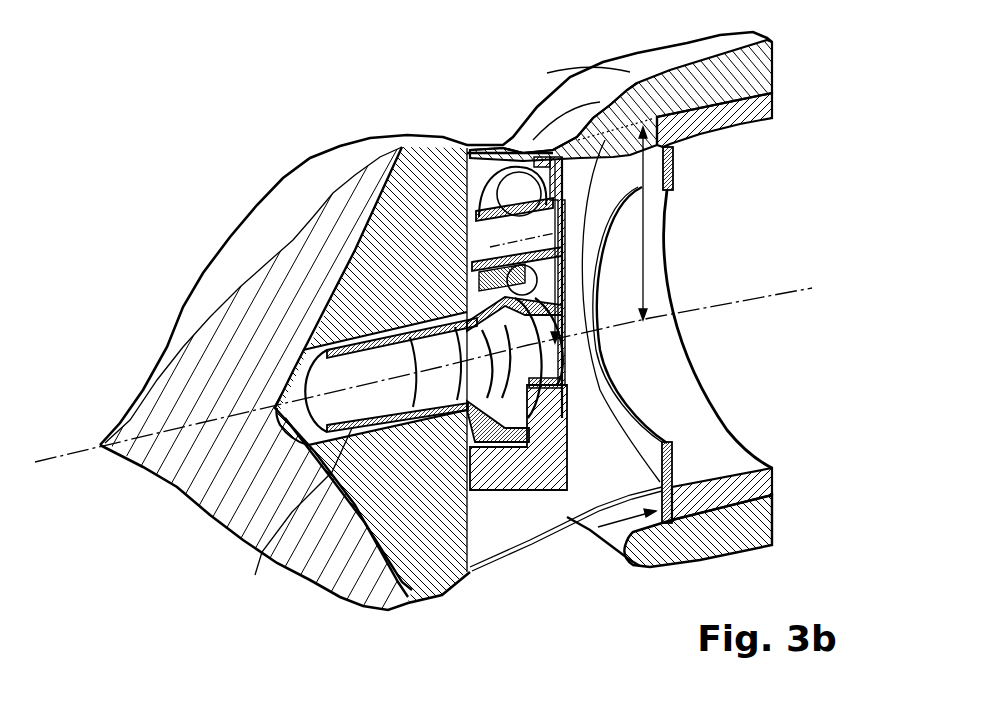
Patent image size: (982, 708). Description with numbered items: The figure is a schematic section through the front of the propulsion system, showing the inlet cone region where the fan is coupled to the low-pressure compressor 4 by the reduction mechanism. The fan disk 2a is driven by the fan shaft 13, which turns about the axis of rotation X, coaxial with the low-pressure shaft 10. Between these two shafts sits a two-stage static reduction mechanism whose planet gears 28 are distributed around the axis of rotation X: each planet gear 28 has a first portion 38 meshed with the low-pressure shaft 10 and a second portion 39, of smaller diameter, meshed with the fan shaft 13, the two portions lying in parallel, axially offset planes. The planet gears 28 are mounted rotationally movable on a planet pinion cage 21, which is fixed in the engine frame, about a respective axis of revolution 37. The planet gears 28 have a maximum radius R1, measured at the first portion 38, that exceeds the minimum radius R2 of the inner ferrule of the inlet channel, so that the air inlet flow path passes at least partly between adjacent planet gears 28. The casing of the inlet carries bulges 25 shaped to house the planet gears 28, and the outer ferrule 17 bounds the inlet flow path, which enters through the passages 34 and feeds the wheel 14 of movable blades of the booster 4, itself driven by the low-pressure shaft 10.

The fan disk 2a is at (437, 578).
The low-pressure compressor 4 is at (768, 106).
The low-pressure shaft 10 is at (567, 373).
The fan shaft 13 is at (262, 556).
The wheel of movable blades 14 is at (675, 172).
The outer ferrule 17 is at (603, 85).
The planet pinion cage 21 is at (503, 500).
The bulges 25 is at (550, 148).
The planet gears 28 is at (533, 405).
The passages 34 is at (600, 523).
The axis of revolution 37 is at (578, 225).
The first portion 38 is at (513, 157).
The second portion 39 is at (490, 207).
The maximum radius of the planet gears R1 is at (565, 278).
The minimum radius of the inner ferrule R2 is at (645, 223).
The axis of rotation X is at (791, 260).